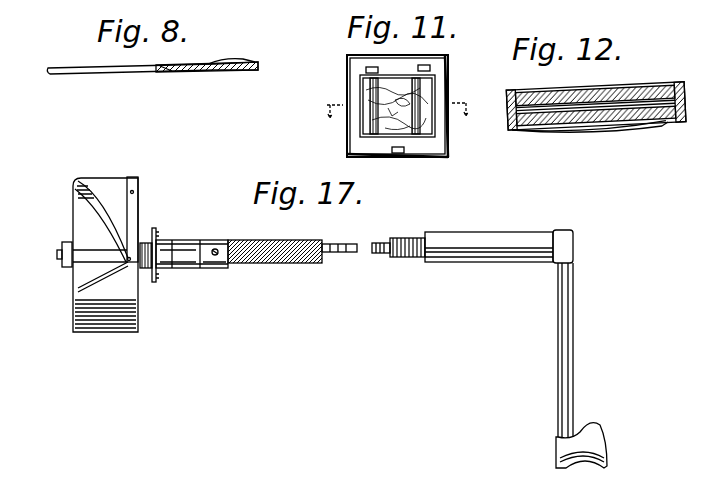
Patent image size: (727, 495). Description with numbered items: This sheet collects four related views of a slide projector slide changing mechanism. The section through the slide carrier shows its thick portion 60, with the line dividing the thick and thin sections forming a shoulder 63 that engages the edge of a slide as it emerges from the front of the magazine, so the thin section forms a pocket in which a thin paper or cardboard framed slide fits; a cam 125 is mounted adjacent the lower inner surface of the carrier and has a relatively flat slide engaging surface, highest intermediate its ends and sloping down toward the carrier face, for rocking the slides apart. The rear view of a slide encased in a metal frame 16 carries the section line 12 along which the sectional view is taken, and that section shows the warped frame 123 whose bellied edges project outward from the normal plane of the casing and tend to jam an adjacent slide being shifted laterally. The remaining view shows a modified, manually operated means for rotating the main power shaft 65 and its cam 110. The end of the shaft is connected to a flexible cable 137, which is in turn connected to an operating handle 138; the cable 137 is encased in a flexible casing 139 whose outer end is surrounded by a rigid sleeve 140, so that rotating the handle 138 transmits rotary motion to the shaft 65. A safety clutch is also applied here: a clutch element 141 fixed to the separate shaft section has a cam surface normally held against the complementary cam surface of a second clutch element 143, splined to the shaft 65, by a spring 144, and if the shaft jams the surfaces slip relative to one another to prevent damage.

In FIG. 8, the thick portion 60 is at (212, 72).
In FIG. 8, the cam 125 is at (230, 63).
In FIG. 8, the shoulder 63 is at (178, 72).
In FIG. 11, the slide frame 16 is at (441, 58).
In FIG. 12, the slide frame 16 is at (655, 82).
In FIG. 11, the section line 12- 12 is at (397, 107).
In FIG. 12, the warped frame 123 is at (638, 120).
In FIG. 17, the cam 110 is at (100, 180).
In FIG. 17, the main power shaft 65 is at (57, 255).
In FIG. 17, the spring 144 is at (146, 272).
In FIG. 17, the clutch element 141 is at (185, 245).
In FIG. 17, the second clutch element 143 is at (170, 250).
In FIG. 17, the flexible casing 139 is at (295, 262).
In FIG. 17, the flexible cable 137 is at (345, 255).
In FIG. 17, the rigid sleeve 140 is at (492, 255).
In FIG. 17, the operating handle 138 is at (573, 312).